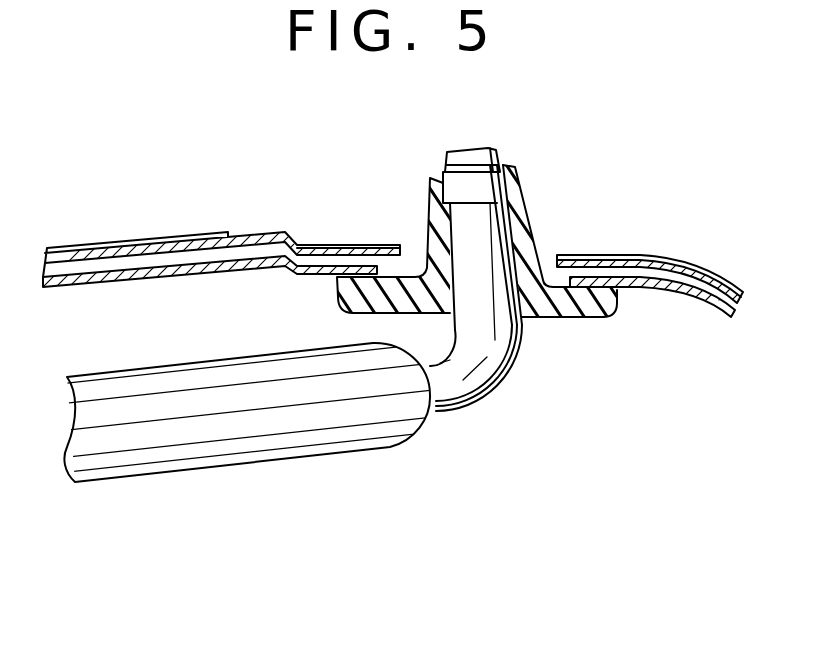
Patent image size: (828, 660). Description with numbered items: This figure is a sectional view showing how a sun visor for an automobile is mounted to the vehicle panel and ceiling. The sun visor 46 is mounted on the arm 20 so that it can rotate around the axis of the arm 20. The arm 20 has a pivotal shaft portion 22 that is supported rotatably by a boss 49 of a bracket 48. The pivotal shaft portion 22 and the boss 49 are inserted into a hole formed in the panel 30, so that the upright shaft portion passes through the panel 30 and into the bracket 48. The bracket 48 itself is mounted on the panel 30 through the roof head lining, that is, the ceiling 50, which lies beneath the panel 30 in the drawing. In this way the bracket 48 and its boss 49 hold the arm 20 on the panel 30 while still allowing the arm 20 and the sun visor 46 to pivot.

The arm 20 is at (470, 404).
The pivotal shaft portion 22 is at (478, 220).
The panel 30 is at (265, 239).
The sun visor 46 is at (304, 458).
The bracket 48 is at (578, 319).
The boss 49 is at (535, 240).
The ceiling 50 is at (280, 270).